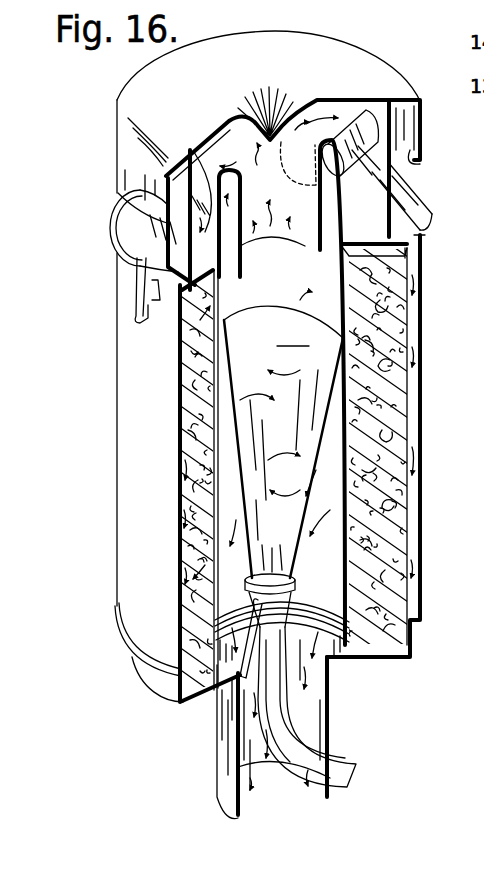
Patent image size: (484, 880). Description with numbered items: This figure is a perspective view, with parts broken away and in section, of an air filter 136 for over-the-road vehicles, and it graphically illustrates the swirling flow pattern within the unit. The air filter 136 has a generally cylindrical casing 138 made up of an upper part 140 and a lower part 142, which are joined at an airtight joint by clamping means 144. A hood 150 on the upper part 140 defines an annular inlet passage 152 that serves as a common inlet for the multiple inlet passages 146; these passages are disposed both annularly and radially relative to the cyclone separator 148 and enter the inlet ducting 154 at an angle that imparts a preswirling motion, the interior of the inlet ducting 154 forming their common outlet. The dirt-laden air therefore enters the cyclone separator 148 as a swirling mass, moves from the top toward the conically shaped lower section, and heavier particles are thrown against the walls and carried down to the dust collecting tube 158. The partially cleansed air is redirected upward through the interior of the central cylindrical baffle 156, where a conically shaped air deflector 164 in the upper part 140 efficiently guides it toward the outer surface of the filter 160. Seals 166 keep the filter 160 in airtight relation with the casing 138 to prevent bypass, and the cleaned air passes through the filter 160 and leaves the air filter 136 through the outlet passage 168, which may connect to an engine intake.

The air filter 136 is at (314, 30).
The casing 138 is at (133, 349).
The upper part 140 is at (137, 231).
The lower part 142 is at (123, 481).
The clamping means 144 is at (137, 298).
The multiple inlet passages 146 is at (380, 122).
The cyclone separator 148 is at (271, 385).
The hood 150 is at (134, 116).
The annular inlet passage 152 is at (406, 150).
The inlet ducting 154 is at (335, 200).
The central cylindrical baffle 156 is at (296, 240).
The dust collecting tube 158 is at (302, 716).
The filter 160 is at (386, 400).
The conically shaped air deflector 164 is at (280, 118).
The seals 166 is at (374, 246).
The outlet passage 168 is at (290, 763).